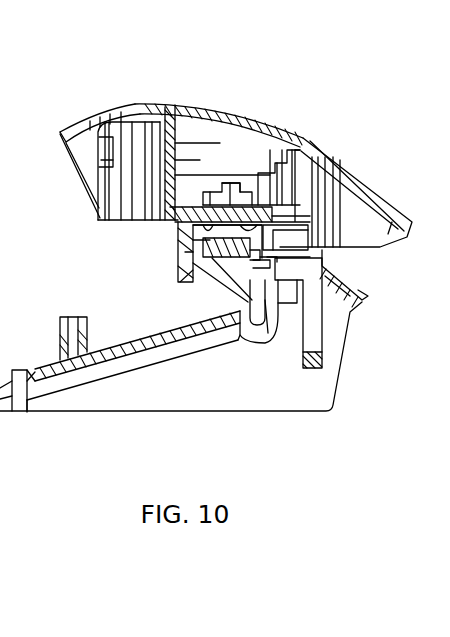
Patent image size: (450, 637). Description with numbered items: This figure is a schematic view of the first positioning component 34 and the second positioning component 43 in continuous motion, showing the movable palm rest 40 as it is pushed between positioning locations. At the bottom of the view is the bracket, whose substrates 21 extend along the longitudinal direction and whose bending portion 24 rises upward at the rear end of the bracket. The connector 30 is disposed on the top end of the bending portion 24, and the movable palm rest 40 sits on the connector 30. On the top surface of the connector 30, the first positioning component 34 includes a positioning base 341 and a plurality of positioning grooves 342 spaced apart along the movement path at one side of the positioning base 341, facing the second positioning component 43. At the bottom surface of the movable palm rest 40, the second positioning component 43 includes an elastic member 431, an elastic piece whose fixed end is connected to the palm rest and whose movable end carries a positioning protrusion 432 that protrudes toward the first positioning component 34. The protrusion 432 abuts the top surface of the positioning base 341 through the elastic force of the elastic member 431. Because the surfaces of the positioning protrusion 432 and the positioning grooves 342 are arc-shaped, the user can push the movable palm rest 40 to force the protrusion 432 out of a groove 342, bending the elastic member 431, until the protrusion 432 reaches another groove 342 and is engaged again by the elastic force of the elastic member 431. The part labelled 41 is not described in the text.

The movable palm rest 40 is at (252, 133).
The cover blade 41 is at (321, 138).
The second positioning component 43 is at (237, 185).
The elastic member 431 is at (293, 222).
The positioning protrusion 432 is at (240, 183).
The positioning grooves 342 is at (178, 233).
The first positioning component 34 is at (184, 250).
The positioning base 341 is at (218, 278).
The connector 30 is at (200, 331).
The substrates 21 is at (125, 345).
The bending portion 24 is at (337, 388).